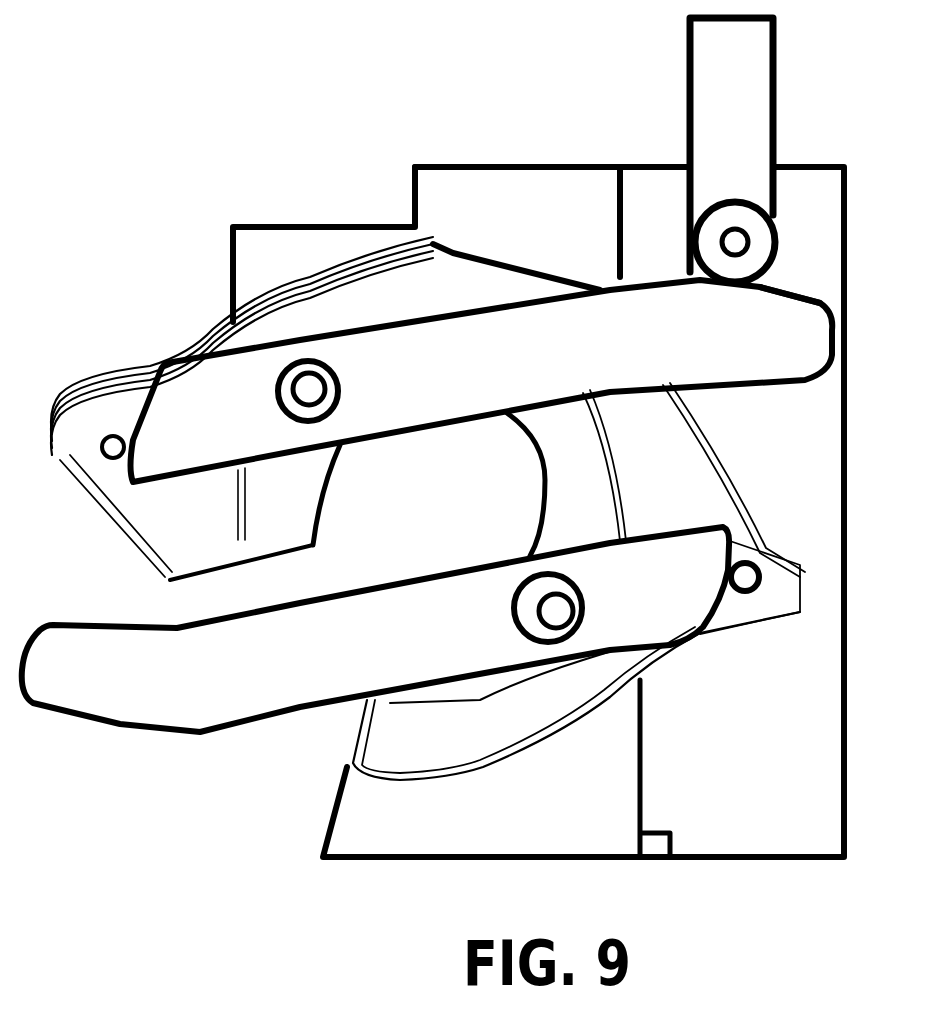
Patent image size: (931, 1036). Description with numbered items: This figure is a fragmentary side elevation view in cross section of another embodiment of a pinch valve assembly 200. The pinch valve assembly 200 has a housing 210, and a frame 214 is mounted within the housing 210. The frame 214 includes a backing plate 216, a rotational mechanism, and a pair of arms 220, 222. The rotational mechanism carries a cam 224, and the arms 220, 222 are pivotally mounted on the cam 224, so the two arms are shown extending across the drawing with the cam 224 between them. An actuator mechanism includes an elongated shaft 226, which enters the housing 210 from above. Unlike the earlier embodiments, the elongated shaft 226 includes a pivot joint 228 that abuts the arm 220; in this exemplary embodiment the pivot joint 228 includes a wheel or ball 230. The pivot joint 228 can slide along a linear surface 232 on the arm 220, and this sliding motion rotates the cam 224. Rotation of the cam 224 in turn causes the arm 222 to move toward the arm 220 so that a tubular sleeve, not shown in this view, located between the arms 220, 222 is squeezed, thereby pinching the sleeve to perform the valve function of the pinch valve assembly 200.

The pinch valve assembly 200 is at (178, 172).
The housing 210 is at (680, 193).
The frame 214 is at (420, 125).
The backing plate 216 is at (300, 240).
The arm 220 is at (190, 390).
The arm 222 is at (143, 652).
The cam 224 is at (300, 313).
The elongated shaft 226 is at (753, 117).
The pivot joint 228 is at (753, 200).
The wheel or ball 230 is at (743, 250).
The linear surface 232 is at (767, 283).